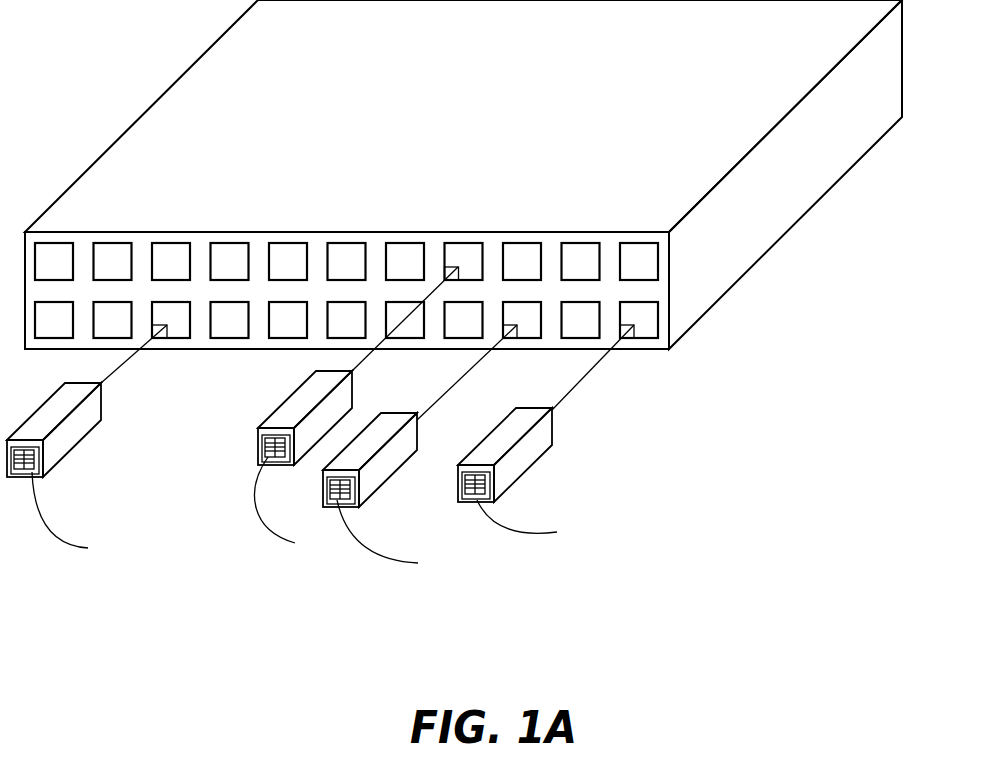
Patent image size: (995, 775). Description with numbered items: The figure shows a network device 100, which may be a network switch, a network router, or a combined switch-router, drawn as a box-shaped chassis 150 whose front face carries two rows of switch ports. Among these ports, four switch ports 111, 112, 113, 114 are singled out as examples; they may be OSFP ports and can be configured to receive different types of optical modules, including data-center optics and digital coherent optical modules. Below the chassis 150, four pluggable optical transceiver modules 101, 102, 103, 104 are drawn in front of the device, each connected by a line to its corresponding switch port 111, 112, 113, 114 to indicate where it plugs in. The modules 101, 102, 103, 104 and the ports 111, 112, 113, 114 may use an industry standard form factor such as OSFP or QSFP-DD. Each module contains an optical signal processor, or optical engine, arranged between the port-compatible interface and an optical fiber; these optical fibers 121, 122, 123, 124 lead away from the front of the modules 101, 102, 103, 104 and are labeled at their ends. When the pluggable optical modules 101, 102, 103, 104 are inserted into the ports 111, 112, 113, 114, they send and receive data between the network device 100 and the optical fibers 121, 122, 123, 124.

The network device 100 is at (463, 210).
The chassis 150 is at (760, 258).
The switch port 111 is at (163, 349).
The switch port 112 is at (459, 241).
The switch port 113 is at (530, 349).
The switch port 114 is at (648, 349).
The pluggable optical module 101 is at (70, 480).
The pluggable optical module 102 is at (276, 474).
The pluggable optical module 103 is at (389, 507).
The pluggable optical module 104 is at (508, 483).
The optical fiber 121 is at (58, 535).
The optical fiber 122 is at (263, 522).
The optical fiber 123 is at (380, 557).
The optical fiber 124 is at (538, 531).